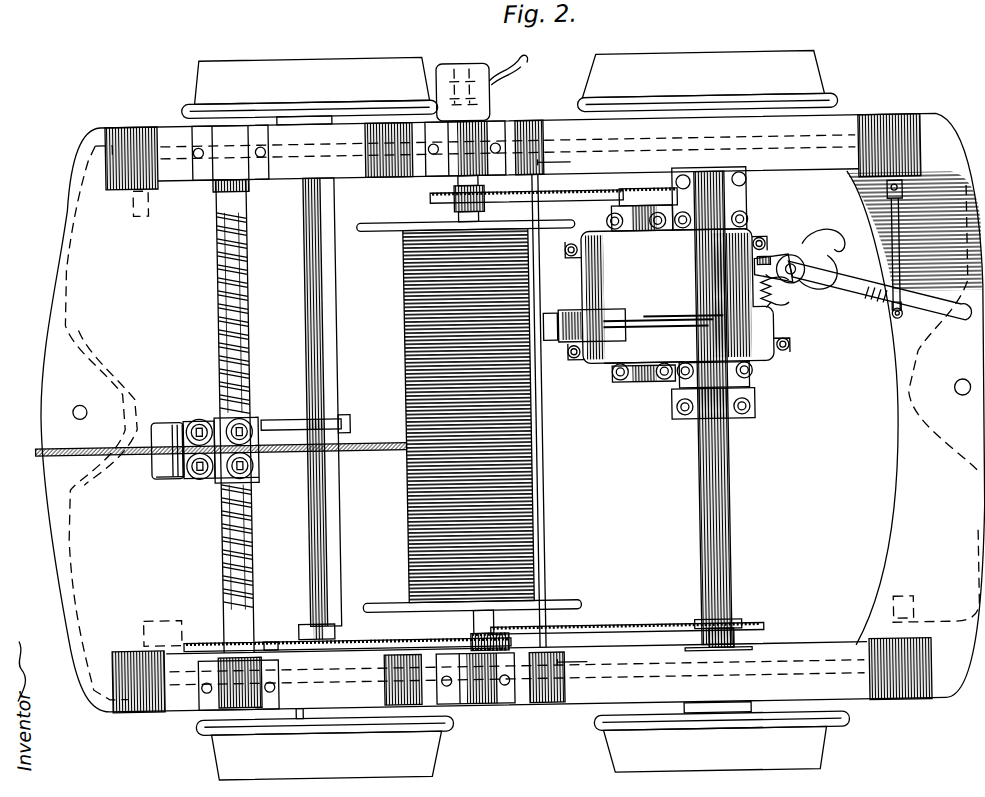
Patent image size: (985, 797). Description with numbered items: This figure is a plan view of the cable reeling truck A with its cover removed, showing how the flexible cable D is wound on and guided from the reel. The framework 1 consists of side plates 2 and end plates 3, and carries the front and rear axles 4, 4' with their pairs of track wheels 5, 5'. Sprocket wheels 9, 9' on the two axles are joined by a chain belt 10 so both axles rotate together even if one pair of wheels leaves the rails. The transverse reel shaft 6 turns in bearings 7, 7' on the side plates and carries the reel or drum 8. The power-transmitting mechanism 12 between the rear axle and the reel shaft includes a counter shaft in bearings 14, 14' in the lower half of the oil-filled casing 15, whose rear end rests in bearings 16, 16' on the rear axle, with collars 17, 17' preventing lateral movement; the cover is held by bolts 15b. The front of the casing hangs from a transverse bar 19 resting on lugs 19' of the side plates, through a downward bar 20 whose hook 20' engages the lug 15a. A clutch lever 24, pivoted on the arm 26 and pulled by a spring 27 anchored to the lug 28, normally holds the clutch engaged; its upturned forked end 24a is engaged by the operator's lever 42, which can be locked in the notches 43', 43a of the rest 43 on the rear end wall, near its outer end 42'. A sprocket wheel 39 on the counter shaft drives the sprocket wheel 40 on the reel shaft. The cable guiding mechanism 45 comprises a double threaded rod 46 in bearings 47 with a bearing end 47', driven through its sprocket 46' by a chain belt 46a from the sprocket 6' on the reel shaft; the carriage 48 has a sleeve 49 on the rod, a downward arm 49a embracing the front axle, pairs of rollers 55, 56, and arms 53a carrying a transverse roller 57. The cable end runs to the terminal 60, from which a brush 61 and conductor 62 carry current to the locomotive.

The cable reeling truck A is at (510, 389).
The framework 1 is at (916, 407).
The side plates 2 is at (545, 717).
The end plates 3 is at (58, 330).
The front axle 4 is at (333, 402).
The rear axle 4' is at (731, 407).
The track wheels 5 is at (318, 418).
The track wheels 5' is at (713, 411).
The reel shaft 6 is at (486, 403).
The sprocket wheel 6' is at (505, 644).
The bearing 7 is at (354, 430).
The bearing 7' is at (477, 133).
The reel 8 is at (546, 236).
The sprocket wheel 9 is at (312, 620).
The sprocket wheel 9' is at (731, 624).
The chain belt 10 is at (660, 628).
The power-transmitting mechanism 12 is at (634, 379).
The bearing 14 is at (641, 389).
The bearing 14' is at (625, 215).
The casing 15 is at (677, 295).
The lug 15a is at (765, 256).
The bolts 15b is at (566, 264).
The bearing 16 is at (732, 380).
The bearing 16' is at (728, 214).
The collar 17 is at (720, 414).
The collar 17' is at (727, 198).
The transversely arranged bar 19 is at (503, 414).
The lugs 19' is at (579, 415).
The downwardly extending bar 20 is at (550, 307).
The hook 20' is at (592, 312).
The clutch-controlling lever 24 is at (780, 264).
The bifurcated outer end 24a is at (837, 258).
The arm 26 is at (772, 300).
The spring 27 is at (774, 308).
The lug 28 is at (775, 318).
The sprocket wheel 39 is at (648, 186).
The sprocket wheel 40 is at (430, 204).
The lever 42 is at (879, 291).
The arm pivot 42' is at (927, 298).
The locking rest 43 is at (914, 254).
The notch 43a is at (898, 278).
The notch 43' is at (915, 293).
The cable guiding mechanism 45 is at (192, 420).
The double threaded rod 46 is at (253, 416).
The sprocket wheel 46' is at (224, 684).
The chain belt 46a is at (378, 653).
The bearings 47 is at (366, 401).
The guide rod end 47' is at (296, 658).
The traveler or carriage 48 is at (253, 424).
The sleeve 49 is at (249, 468).
The arm 49a is at (340, 420).
The arms 53a is at (170, 425).
The rollers 55 is at (197, 482).
The rollers 56 is at (249, 481).
The transversely arranged roller 57 is at (168, 482).
The electrical terminal 60 is at (447, 68).
The collector or brush 61 is at (470, 82).
The conductor 62 is at (522, 72).
The flexible cable D is at (96, 474).